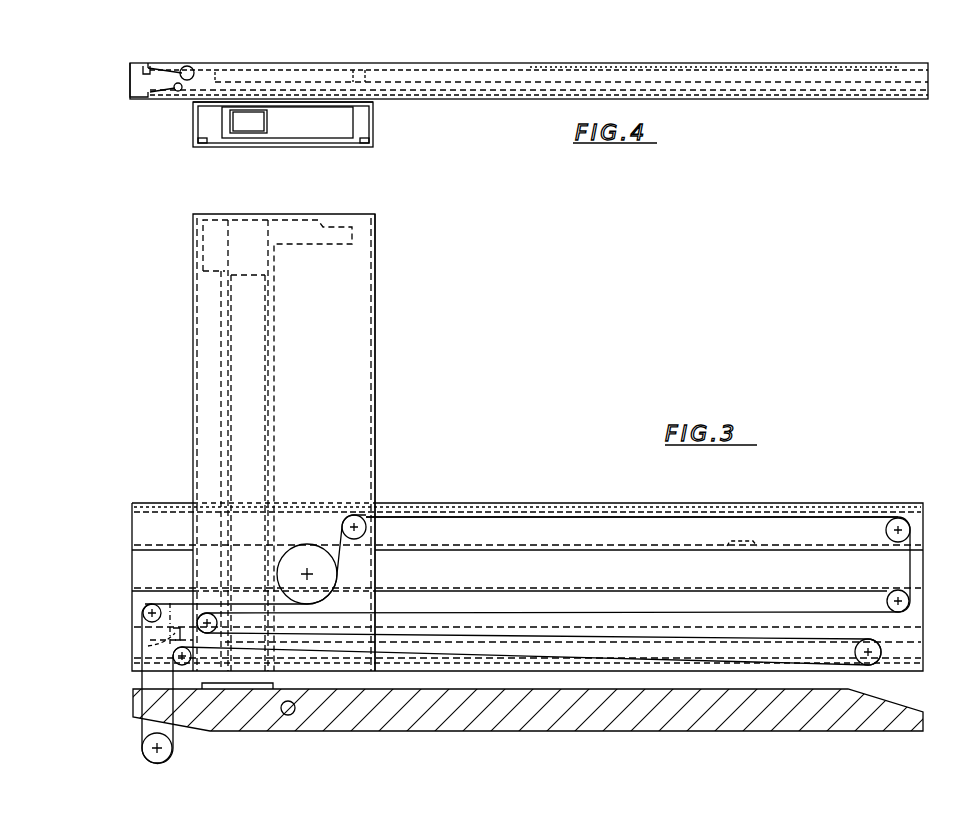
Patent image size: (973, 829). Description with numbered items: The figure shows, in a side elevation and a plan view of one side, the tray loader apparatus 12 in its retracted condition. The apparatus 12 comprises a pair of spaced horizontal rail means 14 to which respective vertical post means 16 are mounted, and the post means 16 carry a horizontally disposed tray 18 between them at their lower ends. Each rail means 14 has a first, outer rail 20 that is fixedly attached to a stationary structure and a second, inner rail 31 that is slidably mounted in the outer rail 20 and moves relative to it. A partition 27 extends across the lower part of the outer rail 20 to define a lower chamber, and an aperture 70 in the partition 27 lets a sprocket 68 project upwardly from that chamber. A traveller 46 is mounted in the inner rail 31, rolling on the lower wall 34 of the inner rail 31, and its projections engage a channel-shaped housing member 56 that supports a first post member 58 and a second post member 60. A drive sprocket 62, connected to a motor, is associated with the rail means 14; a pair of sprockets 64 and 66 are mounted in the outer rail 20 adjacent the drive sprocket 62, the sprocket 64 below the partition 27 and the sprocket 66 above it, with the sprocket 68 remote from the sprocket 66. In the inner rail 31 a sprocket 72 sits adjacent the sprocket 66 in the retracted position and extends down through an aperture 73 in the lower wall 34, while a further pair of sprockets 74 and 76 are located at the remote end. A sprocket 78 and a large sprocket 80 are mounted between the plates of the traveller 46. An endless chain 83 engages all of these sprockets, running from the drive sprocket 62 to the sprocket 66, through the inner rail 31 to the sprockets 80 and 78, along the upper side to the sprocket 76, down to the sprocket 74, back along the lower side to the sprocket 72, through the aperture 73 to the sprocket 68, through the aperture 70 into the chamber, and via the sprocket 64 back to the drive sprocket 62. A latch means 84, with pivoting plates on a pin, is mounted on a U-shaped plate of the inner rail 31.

In FIG. 4, the tray loader apparatus 12 is at (302, 63).
In FIG. 3, the tray loader apparatus 12 is at (193, 267).
In FIG. 4, the horizontal rail means 14 is at (445, 63).
In FIG. 3, the horizontal rail means 14 is at (163, 502).
In FIG. 4, the vertical post means 16 is at (374, 128).
In FIG. 3, the vertical post means 16 is at (193, 321).
In FIG. 3, the tray 18 is at (428, 722).
In FIG. 4, the outer rail 20 is at (399, 61).
In FIG. 3, the outer rail 20 is at (493, 530).
In FIG. 3, the partition 27 is at (924, 647).
In FIG. 4, the inner rail 31 is at (526, 68).
In FIG. 3, the lower wall 34 is at (175, 633).
In FIG. 4, the traveller 46 is at (236, 74).
In FIG. 4, the housing member 56 is at (193, 128).
In FIG. 3, the housing member 56 is at (376, 347).
In FIG. 3, the first post member 58 is at (222, 375).
In FIG. 3, the second post member 60 is at (230, 401).
In FIG. 3, the drive sprocket 62 is at (153, 756).
In FIG. 3, the sprocket 64 is at (184, 666).
In FIG. 3, the sprocket 66 is at (143, 612).
In FIG. 3, the sprocket 68 is at (882, 653).
In FIG. 3, the aperture 70 is at (853, 650).
In FIG. 3, the sprocket 72 is at (232, 687).
In FIG. 3, the aperture 73 is at (214, 662).
In FIG. 3, the sprocket 74 is at (911, 602).
In FIG. 3, the sprocket 76 is at (907, 518).
In FIG. 3, the sprocket 78 is at (356, 515).
In FIG. 3, the large sprocket 80 is at (302, 555).
In FIG. 3, the endless chain 83 is at (413, 517).
In FIG. 4, the latch means 84 is at (146, 78).